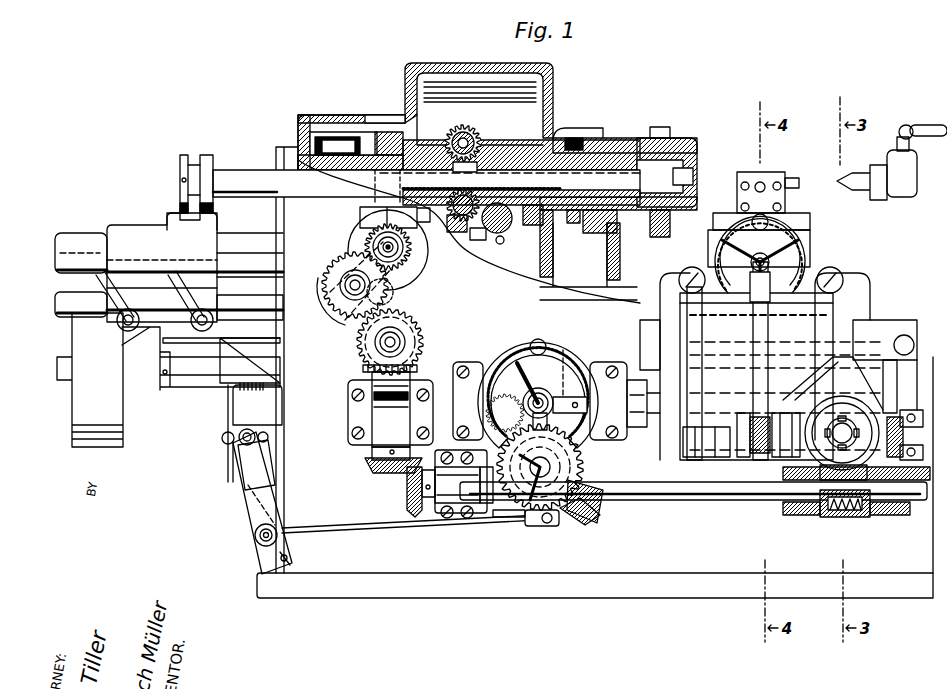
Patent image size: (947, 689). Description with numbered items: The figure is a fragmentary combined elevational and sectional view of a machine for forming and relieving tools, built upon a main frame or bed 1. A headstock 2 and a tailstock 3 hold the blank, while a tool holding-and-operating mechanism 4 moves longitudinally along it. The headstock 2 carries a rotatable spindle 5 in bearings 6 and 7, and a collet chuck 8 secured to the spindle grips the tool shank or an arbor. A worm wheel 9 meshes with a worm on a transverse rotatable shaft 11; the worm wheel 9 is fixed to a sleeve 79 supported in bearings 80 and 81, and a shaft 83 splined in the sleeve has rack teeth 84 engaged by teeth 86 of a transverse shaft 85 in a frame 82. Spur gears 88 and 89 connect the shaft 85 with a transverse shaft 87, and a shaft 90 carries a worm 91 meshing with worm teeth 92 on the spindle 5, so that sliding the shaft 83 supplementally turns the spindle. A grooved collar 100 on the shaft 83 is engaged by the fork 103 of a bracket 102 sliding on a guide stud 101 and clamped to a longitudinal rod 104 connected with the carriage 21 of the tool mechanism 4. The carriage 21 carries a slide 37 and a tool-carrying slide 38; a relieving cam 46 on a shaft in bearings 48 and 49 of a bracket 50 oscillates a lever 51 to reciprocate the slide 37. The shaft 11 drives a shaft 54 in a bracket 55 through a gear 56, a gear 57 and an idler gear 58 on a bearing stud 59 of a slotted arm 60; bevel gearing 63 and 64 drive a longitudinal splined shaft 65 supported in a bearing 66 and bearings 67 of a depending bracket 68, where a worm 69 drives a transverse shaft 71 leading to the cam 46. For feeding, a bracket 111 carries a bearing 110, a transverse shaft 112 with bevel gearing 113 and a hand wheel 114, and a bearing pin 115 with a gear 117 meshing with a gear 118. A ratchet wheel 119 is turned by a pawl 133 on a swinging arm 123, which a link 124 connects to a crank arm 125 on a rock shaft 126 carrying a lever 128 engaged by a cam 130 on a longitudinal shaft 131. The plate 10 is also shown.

The main frame or bed 1 is at (460, 570).
The headstock 2 is at (567, 126).
The tailstock 3 is at (890, 160).
The tool holding-and-operating mechanism 4 is at (740, 172).
The spindle 5 is at (650, 130).
The bearing 6 is at (553, 225).
The bearing 7 is at (607, 225).
The collet chuck 8 is at (692, 152).
The worm wheel 9 is at (392, 116).
The plate 10 is at (923, 420).
The transverse rotatable shaft 11 is at (410, 252).
The carriage 21 is at (882, 328).
The slide 37 is at (840, 274).
The tool-carrying slide 38 is at (808, 240).
The relieving cam 46 is at (742, 457).
The bearing 48 is at (708, 457).
The bearing 49 is at (775, 458).
The bracket 50 is at (688, 382).
The lever 51 is at (755, 382).
The shaft 54 is at (400, 344).
The bracket 55 is at (375, 422).
The gear 56 is at (410, 245).
The gear 57 is at (412, 326).
The idler gear 58 is at (388, 298).
The bearing stud 59 is at (340, 289).
The adjustable slotted arm 60 is at (340, 322).
The bevel gearing 63 is at (417, 368).
The bevel gearing 64 is at (403, 482).
The longitudinal splined shaft 65 is at (665, 500).
The bearing 66 is at (465, 478).
The bearings 67 is at (798, 515).
The depending bracket 68 is at (848, 517).
The worm 69 is at (825, 517).
The transverse shaft 71 is at (850, 405).
The sleeve 79 is at (403, 140).
The bearing 80 is at (300, 142).
The bearing 81 is at (405, 108).
The frame 82 is at (478, 240).
The shaft 83 is at (242, 176).
The rack teeth 84 is at (508, 228).
The transverse shaft 85 is at (460, 233).
The teeth 86 is at (486, 194).
The transverse shaft 87 is at (472, 132).
The spur gear 88 is at (455, 232).
The spur gear 89 is at (459, 128).
The rotatable shaft 90 is at (550, 272).
The worm 91 is at (500, 245).
The worm teeth 92 is at (505, 143).
The annularly grooved collar 100 is at (208, 156).
The longitudinal guide stud 101 is at (96, 238).
The bracket 102 is at (122, 228).
The fork 103 is at (183, 190).
The longitudinal rod 104 is at (250, 298).
The bearing 110 is at (620, 424).
The bracket 111 is at (580, 442).
The transverse shaft 112 is at (566, 362).
The bevel gearing 113 is at (578, 380).
The hand wheel 114 is at (506, 360).
The transverse bearing pin 115 is at (516, 515).
The gear 117 is at (500, 418).
The gear 118 is at (545, 345).
The ratchet wheel 119 is at (600, 480).
The swinging arm 123 is at (552, 530).
The link 124 is at (372, 532).
The oscillating crank arm 125 is at (288, 556).
The transverse rock shaft 126 is at (262, 500).
The lever 128 is at (236, 478).
The cam 130 is at (255, 392).
The longitudinal rotatable shaft 131 is at (238, 440).
The pawl 133 is at (588, 520).